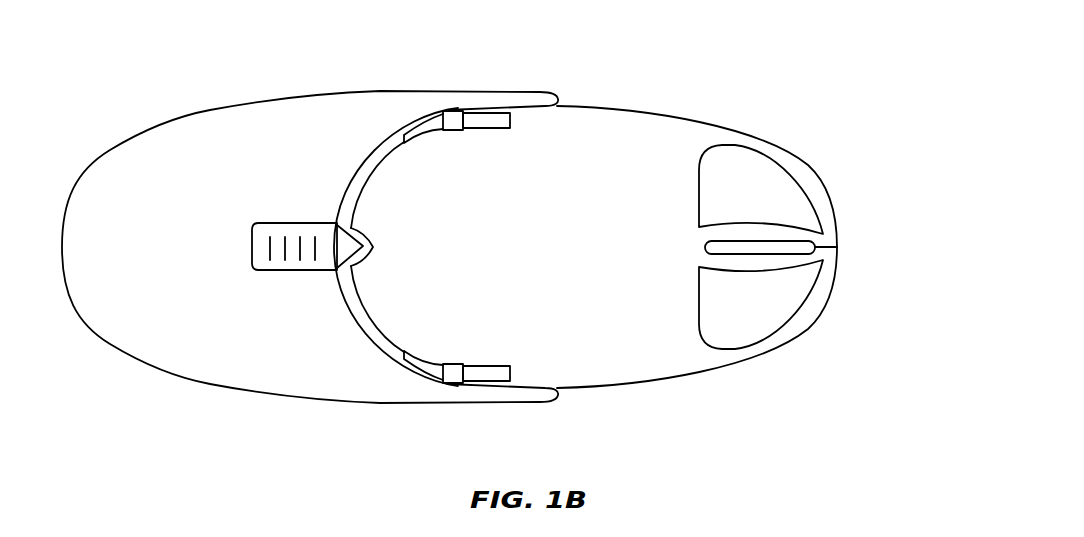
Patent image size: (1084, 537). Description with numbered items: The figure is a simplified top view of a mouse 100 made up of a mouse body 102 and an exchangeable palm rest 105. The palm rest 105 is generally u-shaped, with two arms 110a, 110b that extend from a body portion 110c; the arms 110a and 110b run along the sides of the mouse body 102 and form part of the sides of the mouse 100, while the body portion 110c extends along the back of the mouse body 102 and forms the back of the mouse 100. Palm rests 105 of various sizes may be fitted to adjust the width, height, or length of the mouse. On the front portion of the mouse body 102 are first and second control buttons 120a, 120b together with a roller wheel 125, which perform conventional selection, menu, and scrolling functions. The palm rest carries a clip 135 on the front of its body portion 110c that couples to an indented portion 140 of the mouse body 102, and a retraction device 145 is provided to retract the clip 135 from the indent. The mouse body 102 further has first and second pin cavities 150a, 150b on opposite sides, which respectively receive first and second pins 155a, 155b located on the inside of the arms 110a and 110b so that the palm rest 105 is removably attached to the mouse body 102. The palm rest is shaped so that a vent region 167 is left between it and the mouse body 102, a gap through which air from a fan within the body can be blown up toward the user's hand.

The mouse 100 is at (840, 40).
The mouse body 102 is at (663, 378).
The exchangeable palm rest 105 is at (180, 373).
The arm 110a is at (472, 91).
The arm 110b is at (472, 403).
The body portion 110c is at (208, 253).
The first control button 120a is at (778, 185).
The second control button 120b is at (778, 309).
The roller wheel 125 is at (838, 248).
The clip 135 is at (347, 243).
The indented portion 140 is at (373, 248).
The retraction device 145 is at (285, 226).
The first pin cavity 150a is at (508, 129).
The second pin cavity 150b is at (508, 365).
The first pin 155a is at (453, 131).
The second pin 155b is at (453, 364).
The vent region 167 is at (350, 311).